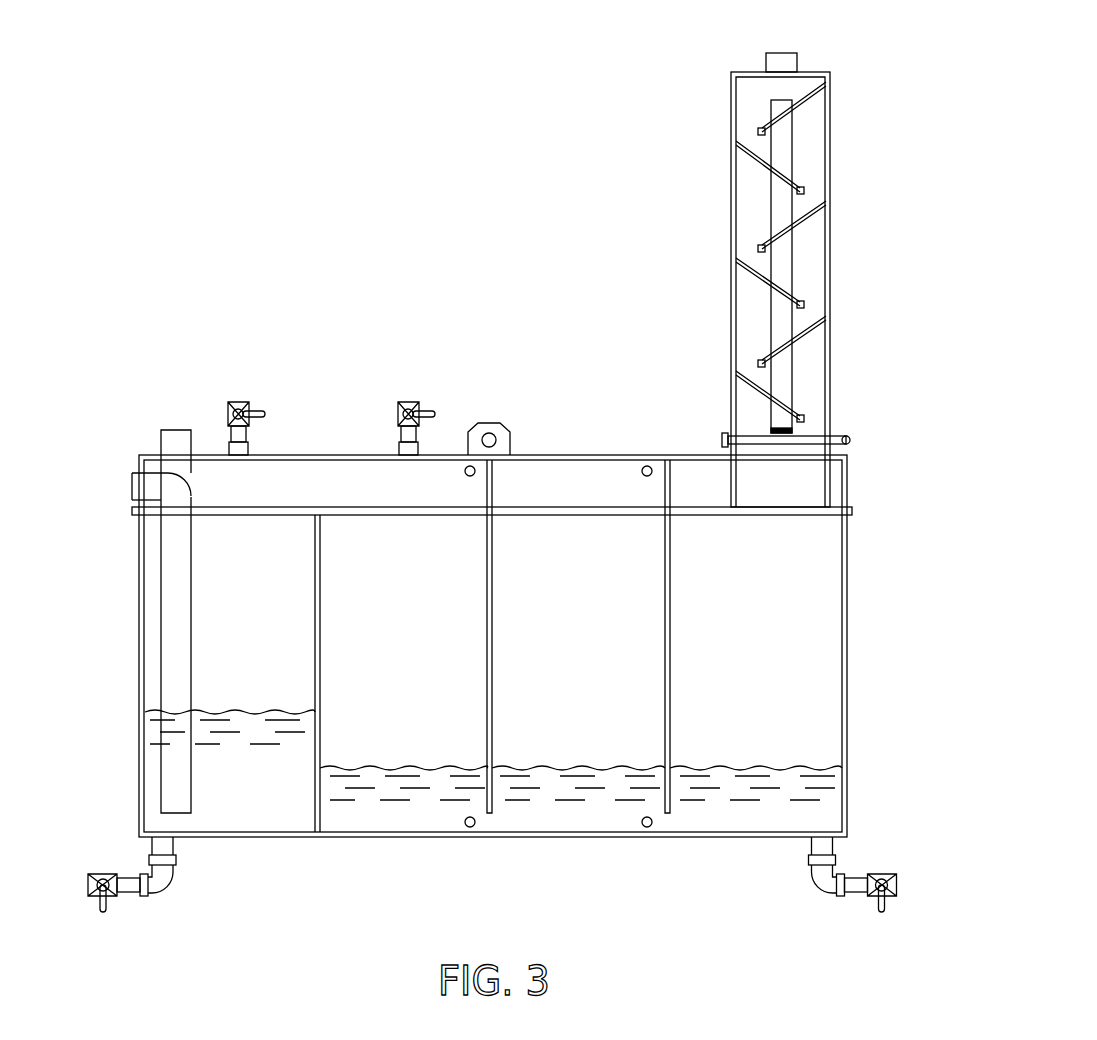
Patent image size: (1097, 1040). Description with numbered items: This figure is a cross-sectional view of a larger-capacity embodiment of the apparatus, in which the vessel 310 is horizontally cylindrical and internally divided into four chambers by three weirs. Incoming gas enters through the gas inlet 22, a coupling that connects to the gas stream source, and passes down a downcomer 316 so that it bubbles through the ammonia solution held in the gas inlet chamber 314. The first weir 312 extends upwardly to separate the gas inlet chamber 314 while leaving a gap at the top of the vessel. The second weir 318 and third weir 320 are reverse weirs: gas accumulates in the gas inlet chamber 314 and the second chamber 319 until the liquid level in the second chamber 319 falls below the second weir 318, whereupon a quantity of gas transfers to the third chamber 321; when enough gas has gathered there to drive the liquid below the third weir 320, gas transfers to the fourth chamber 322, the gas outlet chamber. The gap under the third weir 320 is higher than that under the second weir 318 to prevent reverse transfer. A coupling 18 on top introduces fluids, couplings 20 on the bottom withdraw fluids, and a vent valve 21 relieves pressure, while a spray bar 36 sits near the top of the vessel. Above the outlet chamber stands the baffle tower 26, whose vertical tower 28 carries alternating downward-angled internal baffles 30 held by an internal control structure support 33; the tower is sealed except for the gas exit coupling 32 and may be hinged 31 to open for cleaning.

The coupling 18 is at (228, 418).
The coupling 20 is at (176, 862).
The pressure relief valve or vent valve 21 is at (398, 418).
The gas inlet 22 is at (132, 480).
The baffle tower 26 is at (832, 263).
The vertical tower 28 is at (830, 170).
The internal baffles 30 is at (793, 405).
The hinge 31 is at (850, 440).
The coupling 32 is at (797, 62).
The internal control structure support 33 is at (793, 272).
The spray bar 36 is at (553, 507).
The vessel 310 is at (848, 612).
The first weir 312 is at (320, 655).
The gas inlet chamber 314 is at (273, 625).
The downcomer 316 is at (160, 665).
The second weir 318 is at (493, 655).
The second chamber 319 is at (423, 588).
The third weir 320 is at (672, 655).
The third chamber 321 is at (605, 588).
The fourth chamber 322 is at (780, 588).